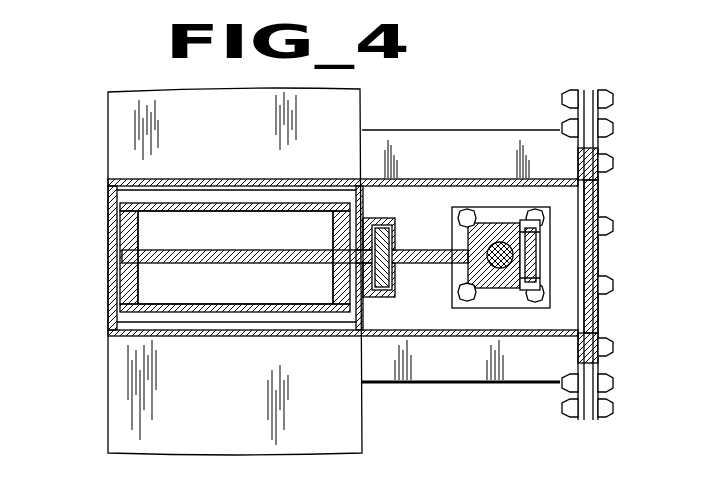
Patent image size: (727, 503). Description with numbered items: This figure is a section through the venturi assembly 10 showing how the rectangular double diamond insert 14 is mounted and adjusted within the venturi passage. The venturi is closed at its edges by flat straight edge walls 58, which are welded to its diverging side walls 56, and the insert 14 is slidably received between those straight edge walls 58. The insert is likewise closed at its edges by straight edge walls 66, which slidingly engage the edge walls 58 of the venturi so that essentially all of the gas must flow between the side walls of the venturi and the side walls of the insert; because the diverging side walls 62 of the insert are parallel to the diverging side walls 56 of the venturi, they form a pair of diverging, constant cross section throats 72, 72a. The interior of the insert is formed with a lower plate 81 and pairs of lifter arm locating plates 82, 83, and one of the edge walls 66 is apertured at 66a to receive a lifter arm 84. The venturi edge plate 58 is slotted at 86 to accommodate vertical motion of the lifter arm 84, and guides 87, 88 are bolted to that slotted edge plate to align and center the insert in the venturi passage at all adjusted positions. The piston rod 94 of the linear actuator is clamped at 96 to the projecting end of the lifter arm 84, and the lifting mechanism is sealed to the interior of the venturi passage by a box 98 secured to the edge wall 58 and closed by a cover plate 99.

The venturi assembly 10 is at (82, 374).
The double diamond insert 14 is at (270, 195).
The diverging side walls 56 is at (110, 180).
The straight edge walls 58 is at (113, 264).
The diverging side walls 62 is at (172, 207).
The straight edge walls 66 is at (110, 221).
The aperture 66a is at (352, 258).
The throat 72 is at (227, 324).
The throat 72a is at (222, 193).
The lower plate 81 is at (290, 307).
The lifter arm locating plate 82 is at (125, 283).
The lifter arm locating plate 83 is at (125, 237).
The lifter arm 84 is at (186, 252).
The slot 86 is at (368, 240).
The guide 87 is at (383, 273).
The guide 88 is at (394, 221).
The piston rod 94 is at (503, 267).
The clamp 96 is at (545, 252).
The box 98 is at (448, 378).
The cover plate 99 is at (600, 266).